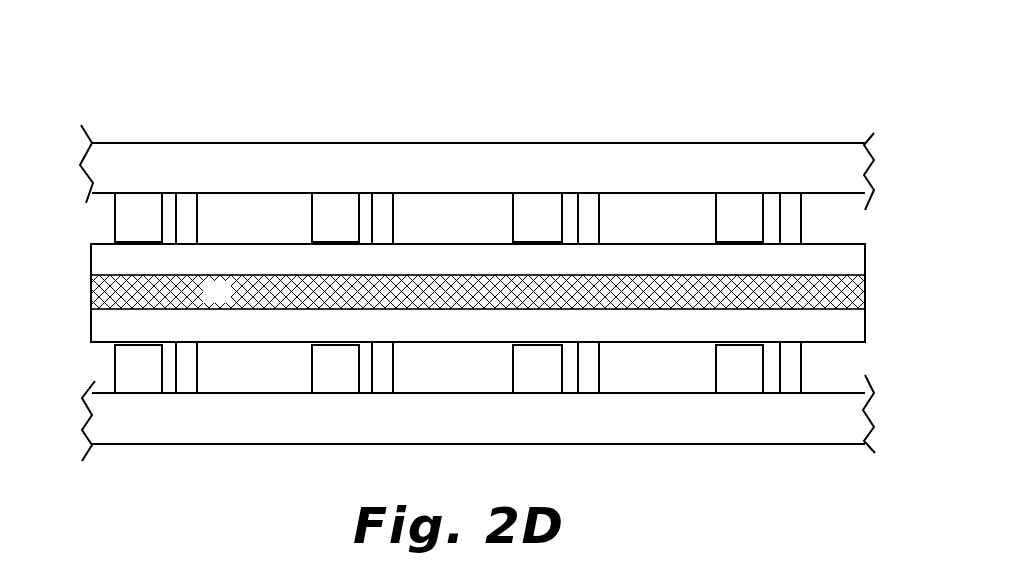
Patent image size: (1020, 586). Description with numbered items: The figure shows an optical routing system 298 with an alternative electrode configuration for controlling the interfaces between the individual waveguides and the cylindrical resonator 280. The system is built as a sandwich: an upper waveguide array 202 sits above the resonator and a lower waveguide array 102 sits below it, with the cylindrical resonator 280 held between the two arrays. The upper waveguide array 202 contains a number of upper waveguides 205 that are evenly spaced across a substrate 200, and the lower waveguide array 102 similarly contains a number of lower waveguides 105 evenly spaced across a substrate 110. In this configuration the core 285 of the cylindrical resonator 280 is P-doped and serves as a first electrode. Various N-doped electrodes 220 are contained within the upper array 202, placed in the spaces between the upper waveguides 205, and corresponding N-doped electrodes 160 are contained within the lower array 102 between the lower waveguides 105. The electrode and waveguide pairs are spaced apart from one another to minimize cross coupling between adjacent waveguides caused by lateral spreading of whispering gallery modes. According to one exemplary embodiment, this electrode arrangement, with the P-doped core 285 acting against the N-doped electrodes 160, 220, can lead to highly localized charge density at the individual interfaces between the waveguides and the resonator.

The optical routing system 298 is at (100, 60).
The upper waveguide array 202 is at (887, 237).
The substrate 200 is at (309, 175).
The upper waveguides 205 is at (123, 216).
The N-doped electrodes 220 is at (188, 193).
The cylindrical resonator 280 is at (107, 263).
The core 285 is at (107, 293).
The lower waveguide array 102 is at (887, 347).
The substrate 110 is at (309, 430).
The lower waveguides 105 is at (123, 373).
The N-doped electrodes 160 is at (188, 380).